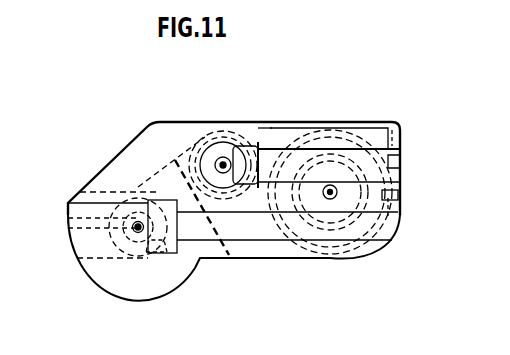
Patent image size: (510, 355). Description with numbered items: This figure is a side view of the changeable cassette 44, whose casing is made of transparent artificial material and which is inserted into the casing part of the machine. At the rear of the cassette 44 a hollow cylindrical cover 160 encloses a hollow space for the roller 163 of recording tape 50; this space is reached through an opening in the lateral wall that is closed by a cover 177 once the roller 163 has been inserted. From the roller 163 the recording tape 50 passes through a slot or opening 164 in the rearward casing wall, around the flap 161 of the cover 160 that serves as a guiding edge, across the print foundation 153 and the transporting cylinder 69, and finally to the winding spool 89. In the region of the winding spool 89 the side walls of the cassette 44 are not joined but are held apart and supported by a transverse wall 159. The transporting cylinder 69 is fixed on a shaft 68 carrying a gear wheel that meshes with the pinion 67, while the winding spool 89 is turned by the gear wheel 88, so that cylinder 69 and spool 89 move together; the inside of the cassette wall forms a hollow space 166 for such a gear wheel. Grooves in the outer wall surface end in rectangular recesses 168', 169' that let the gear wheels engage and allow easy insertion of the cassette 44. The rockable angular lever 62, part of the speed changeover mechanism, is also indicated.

The recording tape 50 is at (154, 170).
The pinion 67 is at (68, 203).
The winding spool 89 is at (128, 196).
The rectangular recess 169' is at (142, 282).
The gear wheel 88 is at (160, 248).
The transverse wall 159 is at (225, 258).
The hollow space 166 is at (213, 240).
The shaft 68 is at (223, 145).
The transporting cylinder 69 is at (213, 150).
The changeable cassette 44 is at (257, 130).
The rectangular recess 168' is at (329, 120).
The print foundation 153 is at (350, 128).
The flap 161 is at (400, 126).
The slot or opening 164 is at (400, 170).
The rockable angular lever 62 is at (318, 148).
The roller 163 is at (383, 228).
The hollow cylindrical cover 160 is at (310, 257).
The cover 177 is at (372, 240).